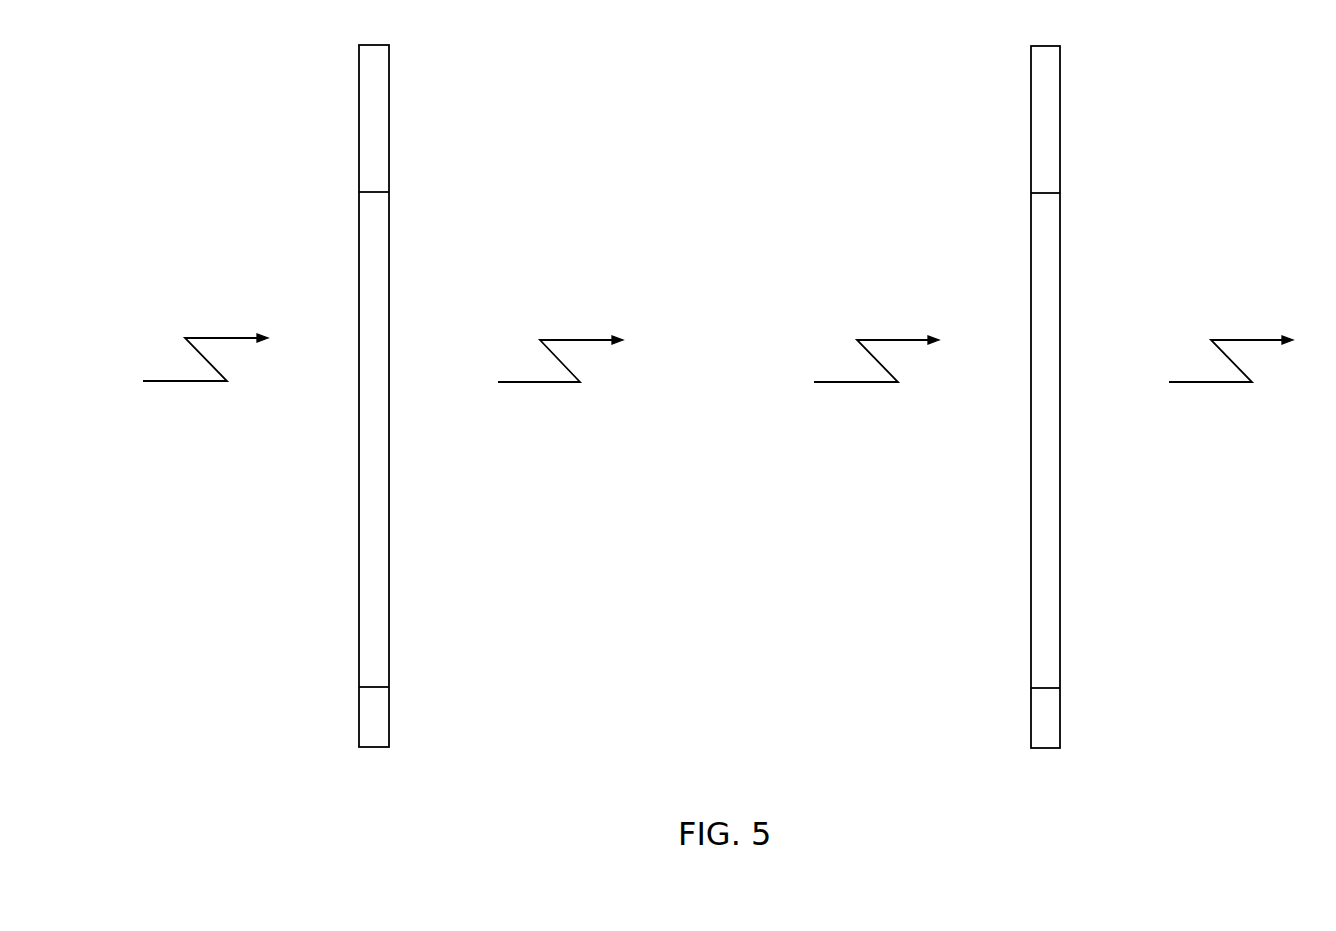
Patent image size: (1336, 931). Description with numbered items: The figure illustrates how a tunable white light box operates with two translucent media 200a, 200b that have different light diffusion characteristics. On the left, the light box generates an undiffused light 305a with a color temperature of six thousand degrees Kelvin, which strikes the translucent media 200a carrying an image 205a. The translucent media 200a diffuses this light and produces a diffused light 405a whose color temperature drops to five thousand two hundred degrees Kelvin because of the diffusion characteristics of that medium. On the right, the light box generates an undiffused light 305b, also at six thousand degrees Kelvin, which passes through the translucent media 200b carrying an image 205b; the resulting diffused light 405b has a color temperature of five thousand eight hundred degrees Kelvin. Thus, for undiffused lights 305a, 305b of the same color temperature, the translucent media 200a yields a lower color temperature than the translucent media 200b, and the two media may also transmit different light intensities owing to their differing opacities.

The translucent media 200a is at (389, 103).
The image 205a is at (389, 251).
The translucent media 200b is at (1060, 103).
The image 205b is at (1060, 251).
The undiffused light 305a is at (207, 284).
The diffused light 405a is at (560, 285).
The undiffused light 305b is at (877, 285).
The diffused light 405b is at (1230, 285).